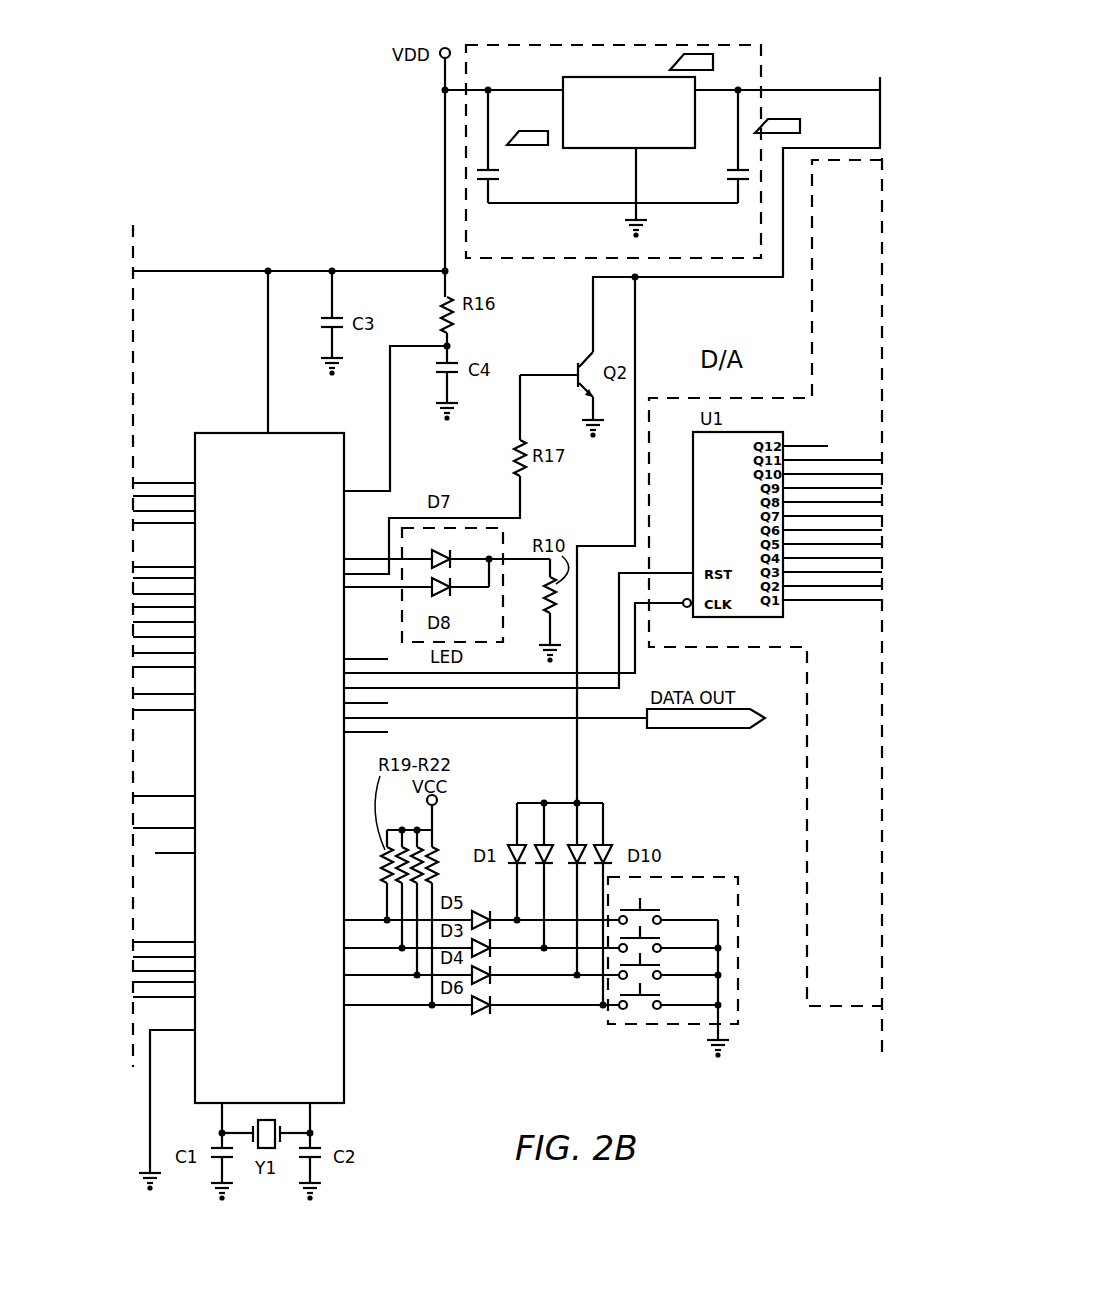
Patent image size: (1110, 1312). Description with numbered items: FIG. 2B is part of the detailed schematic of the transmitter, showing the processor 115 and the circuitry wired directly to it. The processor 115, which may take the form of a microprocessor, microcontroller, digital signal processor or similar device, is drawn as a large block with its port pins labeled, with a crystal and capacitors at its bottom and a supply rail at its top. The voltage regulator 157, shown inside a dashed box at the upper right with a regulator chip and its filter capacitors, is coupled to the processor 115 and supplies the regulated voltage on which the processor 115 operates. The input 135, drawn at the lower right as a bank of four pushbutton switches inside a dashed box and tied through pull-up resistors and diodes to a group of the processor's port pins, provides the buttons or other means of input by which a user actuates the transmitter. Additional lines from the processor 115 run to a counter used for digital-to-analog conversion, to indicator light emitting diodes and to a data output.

The voltage regulator 157 is at (732, 45).
The processor 115 is at (290, 907).
The input 135 is at (738, 998).